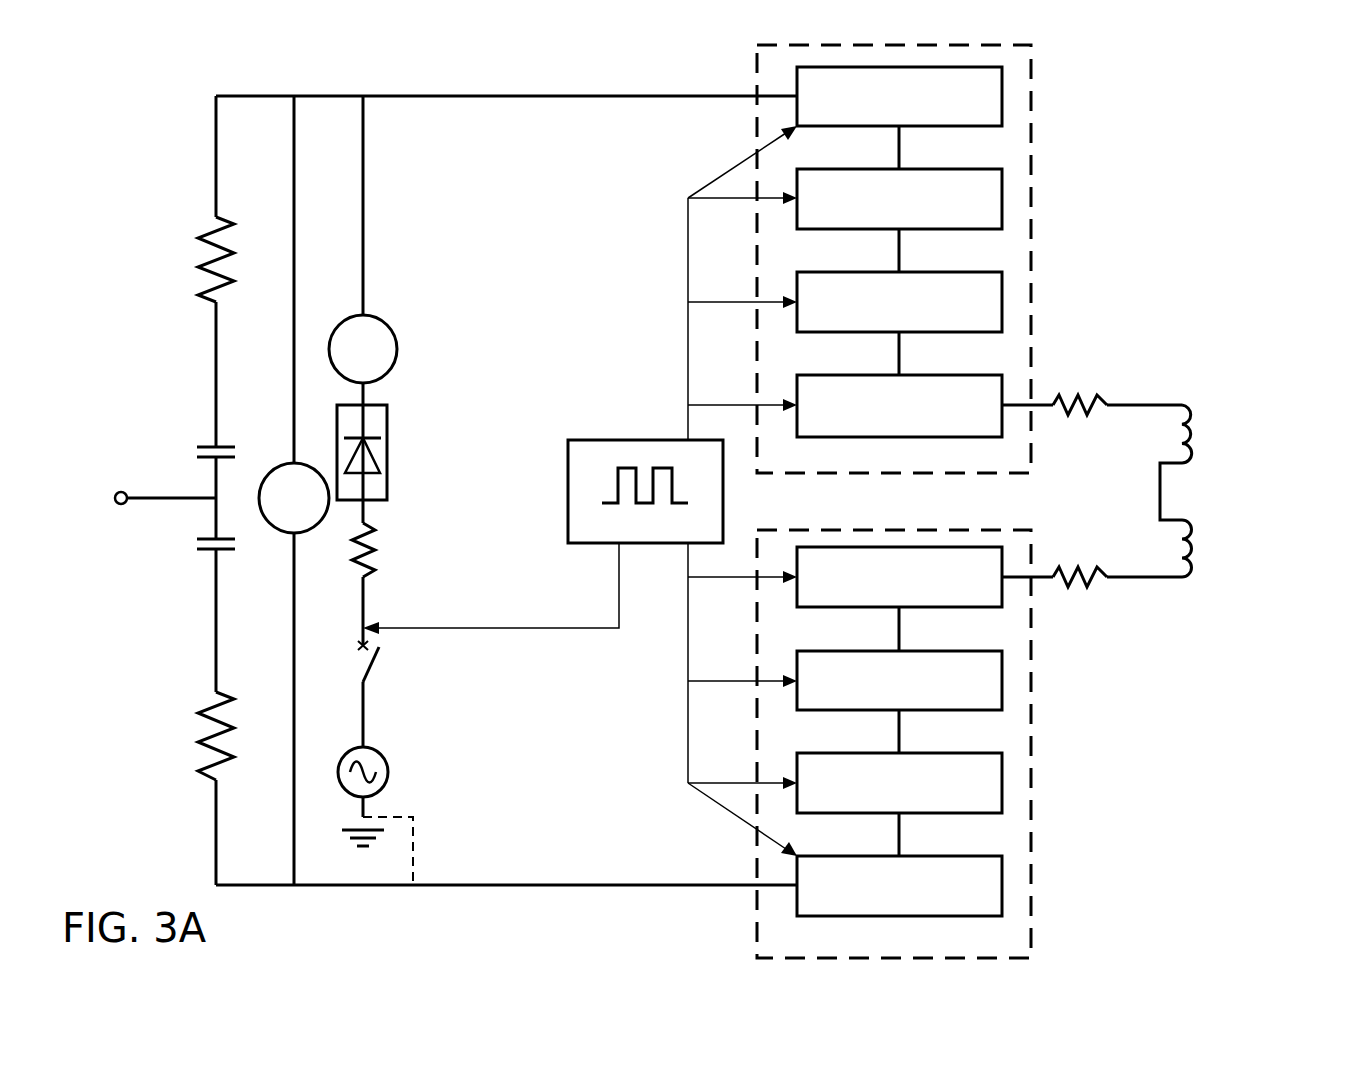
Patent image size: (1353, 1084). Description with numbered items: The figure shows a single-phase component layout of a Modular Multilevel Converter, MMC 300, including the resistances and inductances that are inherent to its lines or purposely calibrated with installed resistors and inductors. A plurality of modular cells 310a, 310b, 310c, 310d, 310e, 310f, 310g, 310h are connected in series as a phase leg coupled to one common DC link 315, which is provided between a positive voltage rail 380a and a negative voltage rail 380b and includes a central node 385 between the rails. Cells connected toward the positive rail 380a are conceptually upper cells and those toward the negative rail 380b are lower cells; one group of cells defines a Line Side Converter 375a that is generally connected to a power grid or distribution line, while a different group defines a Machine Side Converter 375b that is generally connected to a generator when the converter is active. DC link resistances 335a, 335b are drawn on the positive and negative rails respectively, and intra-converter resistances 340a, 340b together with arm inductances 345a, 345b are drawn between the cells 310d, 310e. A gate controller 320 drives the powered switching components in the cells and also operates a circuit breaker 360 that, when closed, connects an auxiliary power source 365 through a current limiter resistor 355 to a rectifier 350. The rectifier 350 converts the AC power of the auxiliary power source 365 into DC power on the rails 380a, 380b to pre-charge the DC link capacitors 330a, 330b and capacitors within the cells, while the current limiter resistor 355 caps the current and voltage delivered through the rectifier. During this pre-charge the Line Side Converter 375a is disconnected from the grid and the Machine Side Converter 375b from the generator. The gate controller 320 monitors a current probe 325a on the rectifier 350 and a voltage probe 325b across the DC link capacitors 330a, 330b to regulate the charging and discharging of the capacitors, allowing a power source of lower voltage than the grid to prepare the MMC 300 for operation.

The Modular Multilevel Converter 300 is at (1272, 135).
The cell 310a is at (899, 96).
The cell 310b is at (899, 199).
The cell 310c is at (899, 302).
The cell 310d is at (899, 406).
The cell 310e is at (899, 577).
The cell 310f is at (899, 680).
The cell 310g is at (899, 783).
The cell 310h is at (899, 886).
The DC link 315 is at (216, 153).
The gate controller 320 is at (599, 440).
The current probe 325a is at (363, 349).
The voltage probe 325b is at (294, 498).
The DC link capacitor 330a is at (197, 451).
The DC link capacitor 330b is at (197, 549).
The DC link resistance 335a is at (198, 296).
The DC link resistance 335b is at (199, 780).
The intra-converter resistance 340a is at (1072, 395).
The intra-converter resistance 340b is at (1105, 580).
The arm inductance 345a is at (1182, 405).
The arm inductance 345b is at (1187, 520).
The rectifier 350 is at (390, 460).
The current limiter resistor 355 is at (375, 562).
The circuit breaker 360 is at (363, 685).
The auxiliary power source 365 is at (388, 771).
The Line Side Converter 375a is at (1031, 280).
The Machine Side Converter 375b is at (1031, 815).
The positive voltage rail 380a is at (592, 97).
The negative voltage rail 380b is at (538, 885).
The central node 385 is at (121, 492).